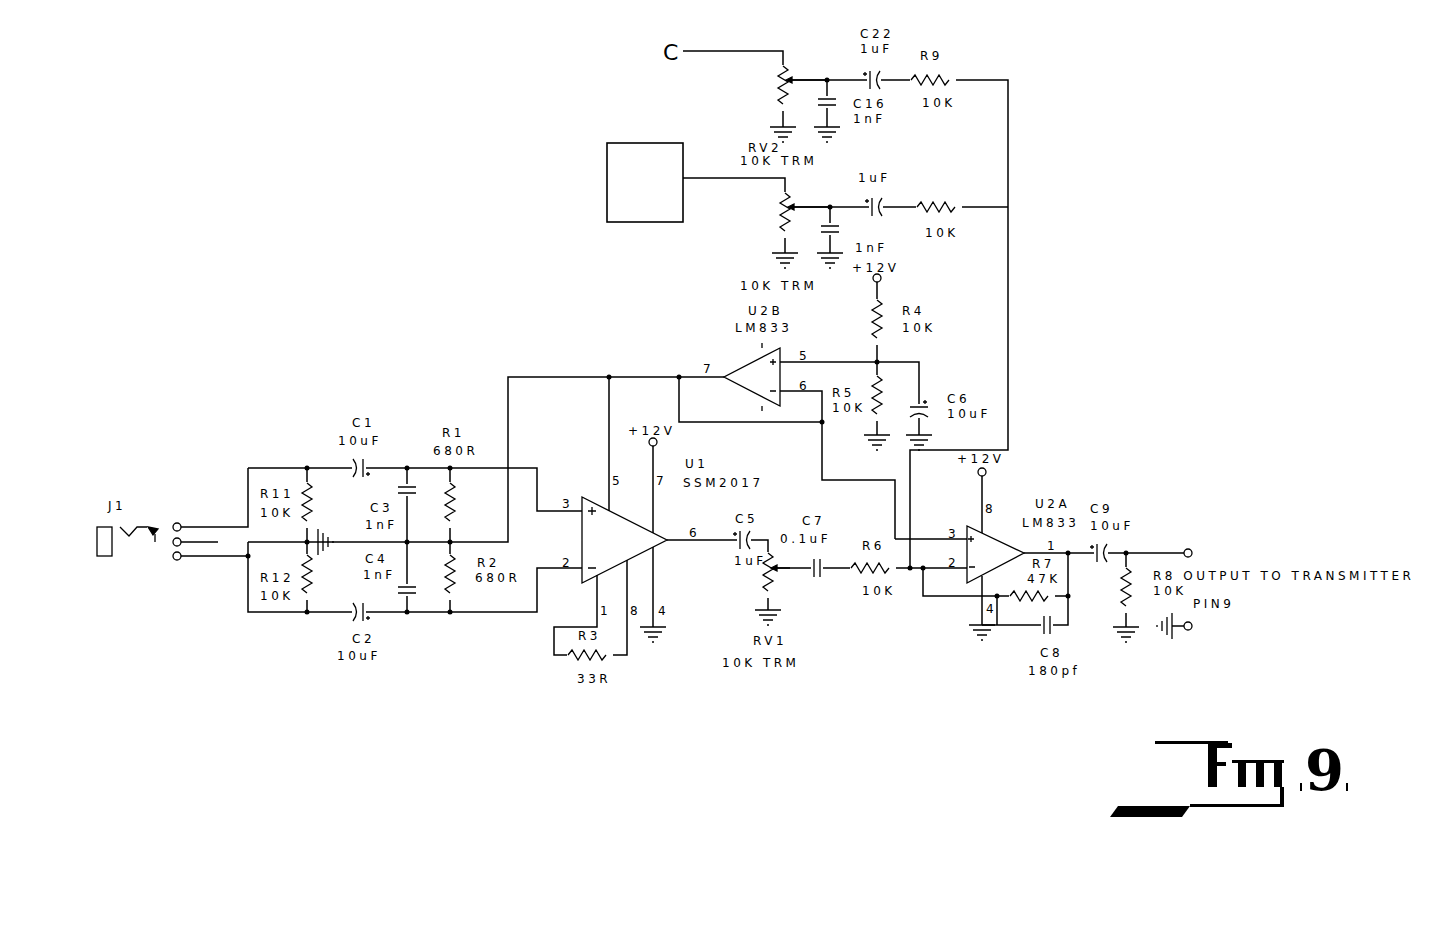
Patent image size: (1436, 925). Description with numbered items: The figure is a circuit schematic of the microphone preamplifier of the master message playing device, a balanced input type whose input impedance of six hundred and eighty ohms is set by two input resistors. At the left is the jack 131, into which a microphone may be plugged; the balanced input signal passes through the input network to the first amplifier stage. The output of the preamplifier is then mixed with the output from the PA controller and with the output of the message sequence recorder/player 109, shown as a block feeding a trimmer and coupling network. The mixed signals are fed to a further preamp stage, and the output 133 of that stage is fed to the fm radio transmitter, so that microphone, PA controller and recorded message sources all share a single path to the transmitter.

The jack 131 is at (123, 495).
The digital recorder/player 109 is at (607, 208).
The output 133 is at (1174, 550).